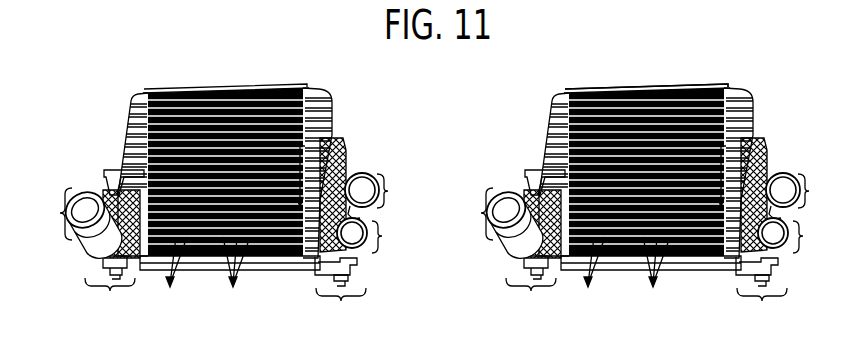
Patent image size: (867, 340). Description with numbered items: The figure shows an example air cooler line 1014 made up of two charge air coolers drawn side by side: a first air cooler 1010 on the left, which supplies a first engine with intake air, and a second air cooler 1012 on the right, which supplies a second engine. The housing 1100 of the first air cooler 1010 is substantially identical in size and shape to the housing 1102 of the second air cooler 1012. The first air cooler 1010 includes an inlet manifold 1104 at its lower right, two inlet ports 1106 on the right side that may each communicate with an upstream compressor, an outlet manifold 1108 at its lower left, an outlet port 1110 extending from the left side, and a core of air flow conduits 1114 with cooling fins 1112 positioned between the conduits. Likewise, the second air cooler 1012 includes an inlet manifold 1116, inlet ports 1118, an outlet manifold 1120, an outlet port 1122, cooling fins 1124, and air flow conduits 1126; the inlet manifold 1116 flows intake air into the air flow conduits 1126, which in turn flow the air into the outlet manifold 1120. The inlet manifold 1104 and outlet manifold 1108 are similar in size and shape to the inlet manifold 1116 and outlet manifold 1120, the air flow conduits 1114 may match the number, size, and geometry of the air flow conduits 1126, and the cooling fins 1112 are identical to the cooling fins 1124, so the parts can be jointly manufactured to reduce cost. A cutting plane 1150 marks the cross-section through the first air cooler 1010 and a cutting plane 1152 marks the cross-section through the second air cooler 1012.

The first air cooler 1010 is at (122, 96).
The housing 1100 is at (334, 117).
The cutting plane 1150 is at (323, 176).
The inlet ports 1106 is at (382, 213).
The inlet manifold 1104 is at (340, 294).
The outlet manifold 1108 is at (110, 291).
The outlet port 1110 is at (71, 221).
The cooling fins 1112 is at (169, 273).
The air flow conduits 1114 is at (237, 273).
The second air cooler 1012 is at (546, 101).
The air cooler line 1014 is at (753, 77).
The housing 1102 is at (753, 117).
The cutting plane 1152 is at (745, 176).
The inlet ports 1118 is at (801, 213).
The inlet manifold 1116 is at (761, 294).
The outlet manifold 1120 is at (531, 291).
The outlet port 1122 is at (494, 221).
The cooling fins 1124 is at (587, 273).
The air flow conduits 1126 is at (657, 273).